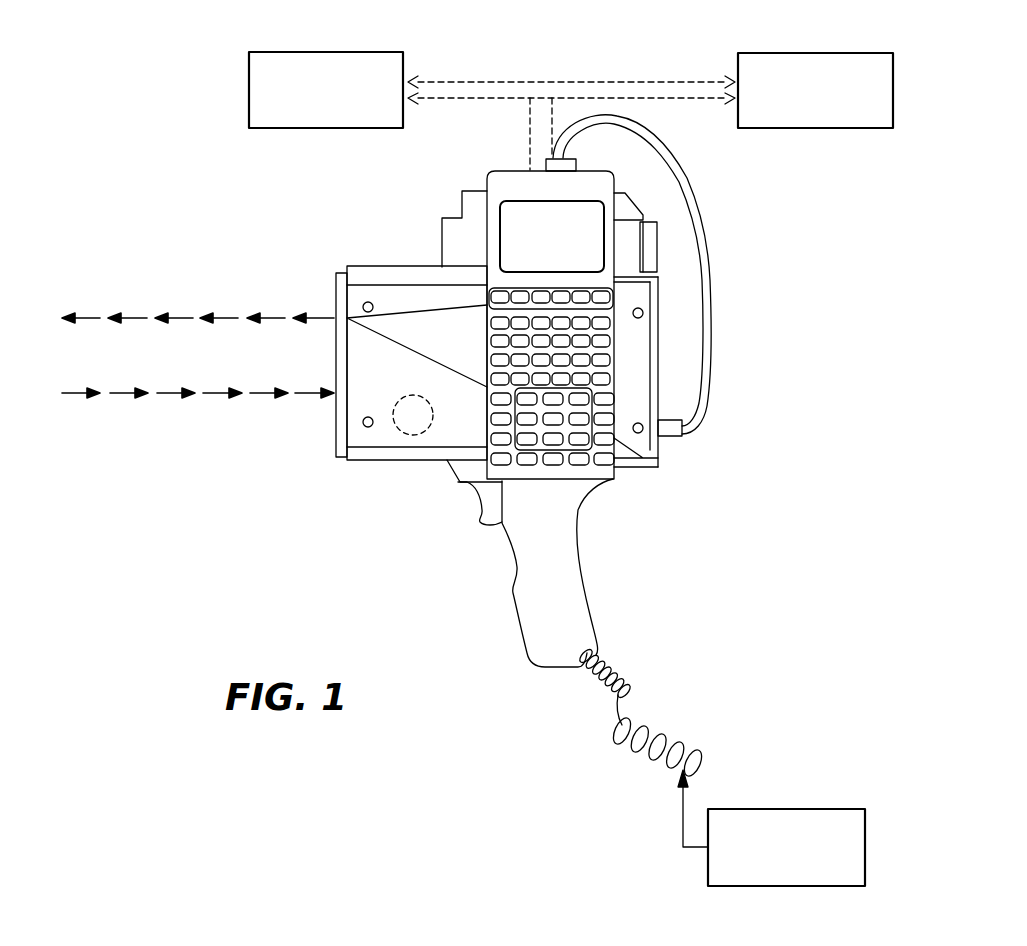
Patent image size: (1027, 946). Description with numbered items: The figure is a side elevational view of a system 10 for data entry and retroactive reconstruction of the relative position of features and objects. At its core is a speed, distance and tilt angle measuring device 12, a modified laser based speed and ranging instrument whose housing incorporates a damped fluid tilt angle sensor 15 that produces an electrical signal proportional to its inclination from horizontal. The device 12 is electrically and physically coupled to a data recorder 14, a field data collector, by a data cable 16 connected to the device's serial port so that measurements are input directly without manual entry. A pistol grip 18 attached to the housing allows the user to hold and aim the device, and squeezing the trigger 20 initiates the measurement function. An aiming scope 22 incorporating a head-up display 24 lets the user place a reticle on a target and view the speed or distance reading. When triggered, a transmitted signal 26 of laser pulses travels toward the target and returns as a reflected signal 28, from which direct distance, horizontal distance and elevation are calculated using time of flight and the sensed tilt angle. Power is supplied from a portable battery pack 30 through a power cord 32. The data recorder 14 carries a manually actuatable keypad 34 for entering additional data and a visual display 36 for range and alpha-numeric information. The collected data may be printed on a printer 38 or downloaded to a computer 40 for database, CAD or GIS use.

The system 10 is at (330, 522).
The speed, distance and tilt angle measuring device 12 is at (380, 268).
The data recorder 14 is at (614, 329).
The tilt angle sensor 15 is at (413, 435).
The data cable 16 is at (710, 317).
The pistol grip 18 is at (587, 562).
The trigger 20 is at (480, 500).
The aiming scope 22 is at (658, 248).
The head-up display 24 is at (458, 197).
The transmitted signal 26 is at (225, 318).
The reflected signal 28 is at (218, 393).
The portable battery pack 30 is at (810, 809).
The power cord 32 is at (680, 730).
The keypad 34 is at (578, 440).
The visual display 36 is at (533, 223).
The printer 38 is at (305, 53).
The computer 40 is at (755, 53).